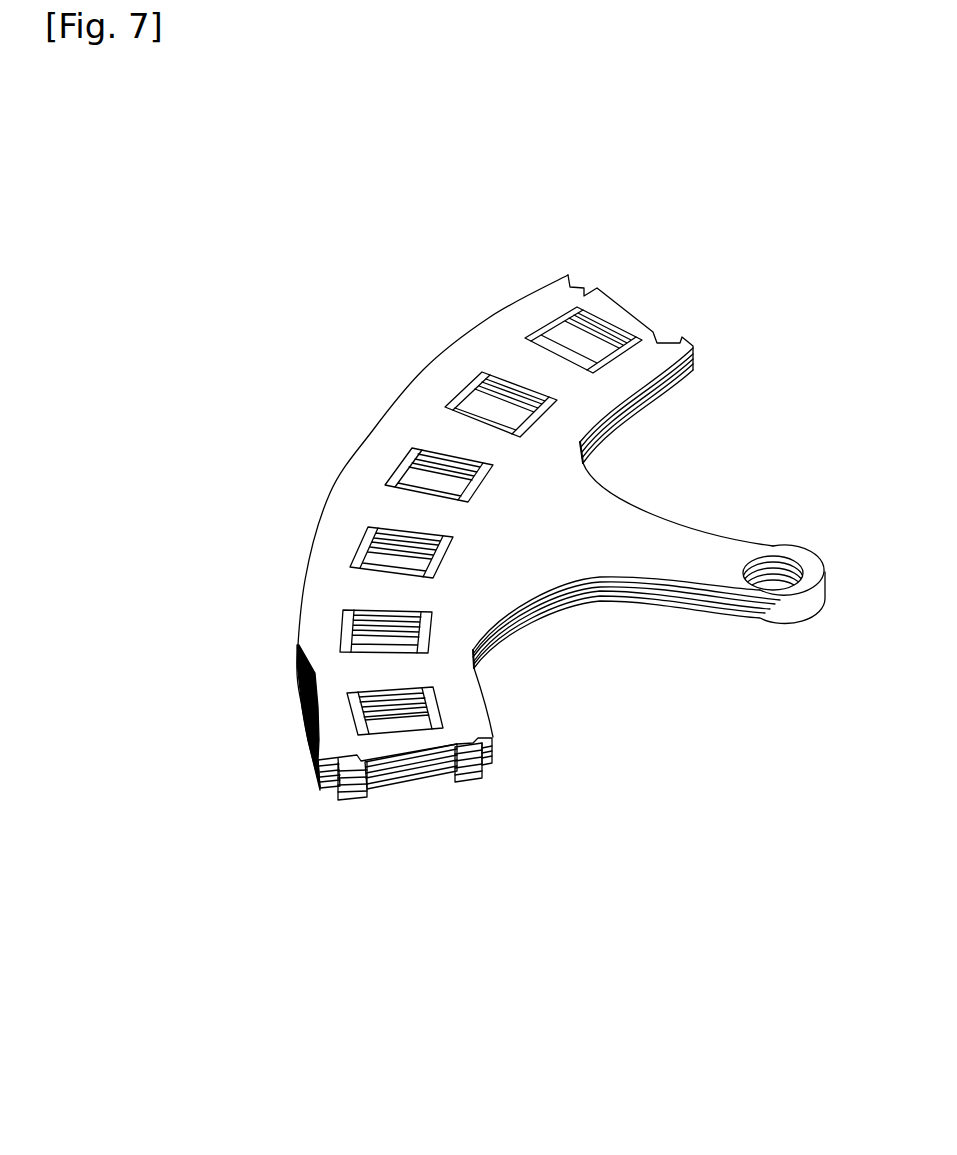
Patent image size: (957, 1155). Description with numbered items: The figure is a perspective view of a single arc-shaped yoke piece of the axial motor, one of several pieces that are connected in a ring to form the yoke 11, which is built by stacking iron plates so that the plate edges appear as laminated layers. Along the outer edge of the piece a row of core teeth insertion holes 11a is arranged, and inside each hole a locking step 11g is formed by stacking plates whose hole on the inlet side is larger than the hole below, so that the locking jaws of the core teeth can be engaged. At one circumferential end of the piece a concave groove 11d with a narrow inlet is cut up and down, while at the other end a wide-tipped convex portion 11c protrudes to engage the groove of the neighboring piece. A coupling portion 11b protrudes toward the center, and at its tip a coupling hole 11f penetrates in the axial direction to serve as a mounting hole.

The yoke 11 is at (156, 88).
The core teeth insertion hole 11a is at (438, 332).
The coupling portion 11b is at (655, 605).
The convex portion 11c is at (355, 797).
The concave groove 11d is at (580, 287).
The coupling hole 11f is at (777, 573).
The locking step 11g is at (473, 397).